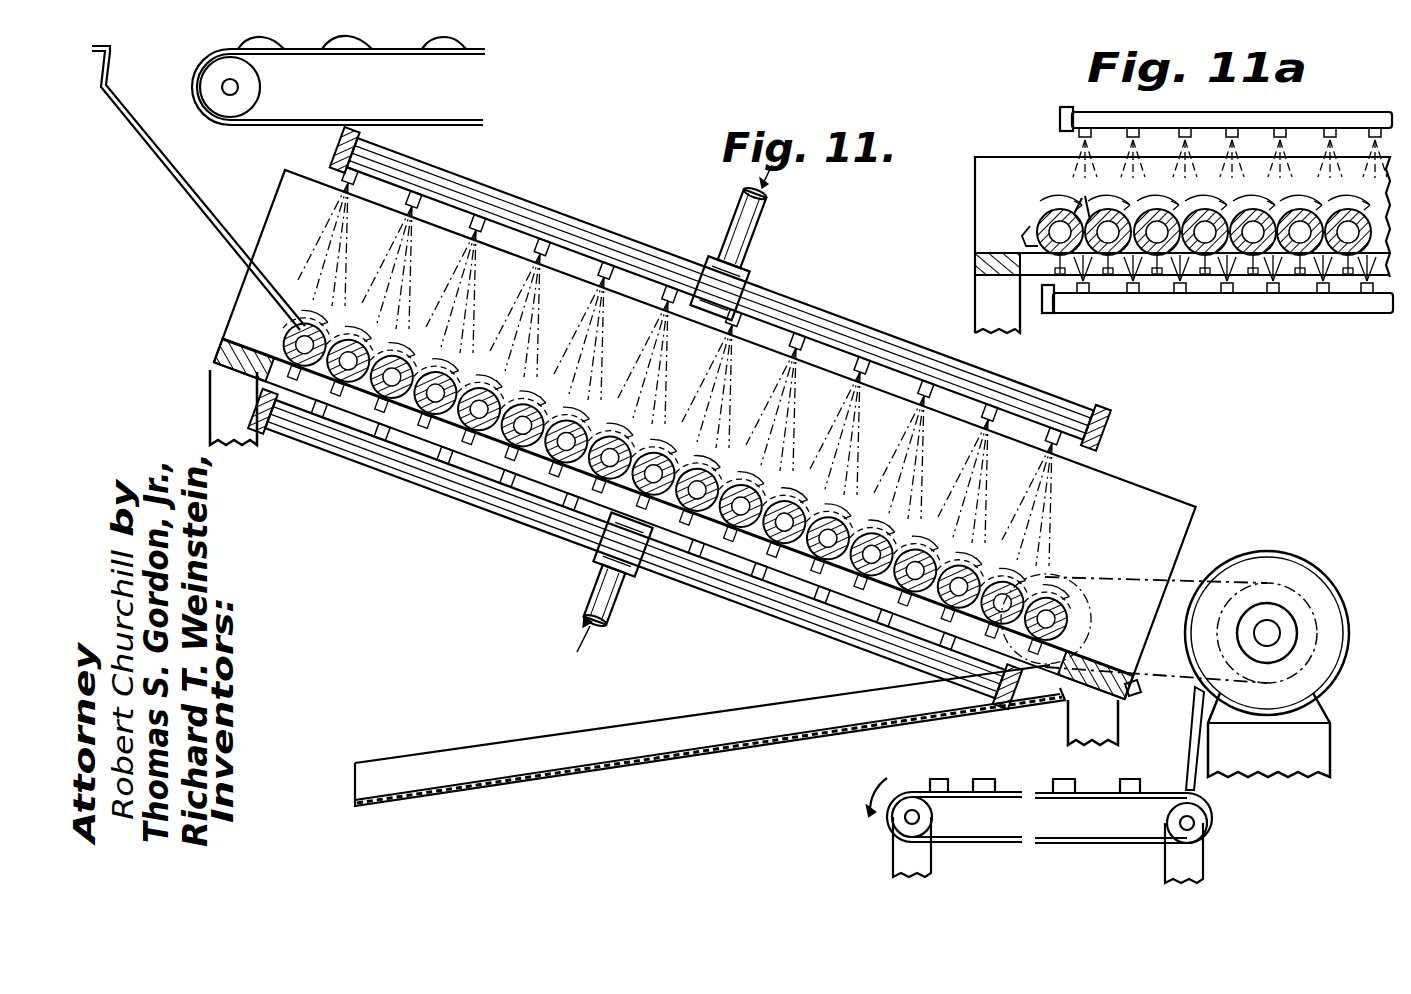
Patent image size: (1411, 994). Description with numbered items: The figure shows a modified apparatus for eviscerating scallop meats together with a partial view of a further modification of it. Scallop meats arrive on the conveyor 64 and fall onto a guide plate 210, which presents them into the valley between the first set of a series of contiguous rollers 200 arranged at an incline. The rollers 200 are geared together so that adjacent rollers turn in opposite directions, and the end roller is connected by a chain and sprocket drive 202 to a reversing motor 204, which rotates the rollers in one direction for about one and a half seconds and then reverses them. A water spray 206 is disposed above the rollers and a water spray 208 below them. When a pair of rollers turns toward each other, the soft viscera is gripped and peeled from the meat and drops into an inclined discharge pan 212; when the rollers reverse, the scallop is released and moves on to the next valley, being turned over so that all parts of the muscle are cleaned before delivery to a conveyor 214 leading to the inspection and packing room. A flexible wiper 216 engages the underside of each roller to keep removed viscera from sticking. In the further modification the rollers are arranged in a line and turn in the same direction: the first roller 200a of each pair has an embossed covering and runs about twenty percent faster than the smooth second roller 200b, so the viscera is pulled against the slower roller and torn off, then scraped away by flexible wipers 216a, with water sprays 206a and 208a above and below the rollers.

In FIG. 11, the conveyor 64 is at (400, 52).
In FIG. 11, the guide plate 210 is at (204, 211).
In FIG. 11, the water spray 206 is at (760, 337).
In FIG. 11, the rollers 200 is at (723, 478).
In FIG. 11, the water spray 208 is at (317, 389).
In FIG. 11, the flexible wiper 216 is at (365, 430).
In FIG. 11, the chain and sprocket drive 202 is at (1180, 583).
In FIG. 11, the reversing motor 204 is at (1300, 580).
In FIG. 11, the inclined discharge pan 212 is at (673, 757).
In FIG. 11, the conveyor 214 is at (921, 790).
In FIG. 11A, the water spray 206a is at (1216, 112).
In FIG. 11A, the first roller 200a is at (1052, 215).
In FIG. 11A, the second roller 200b is at (1160, 203).
In FIG. 11A, the flexible wipers 216a is at (1036, 222).
In FIG. 11A, the water spray 208a is at (1224, 312).